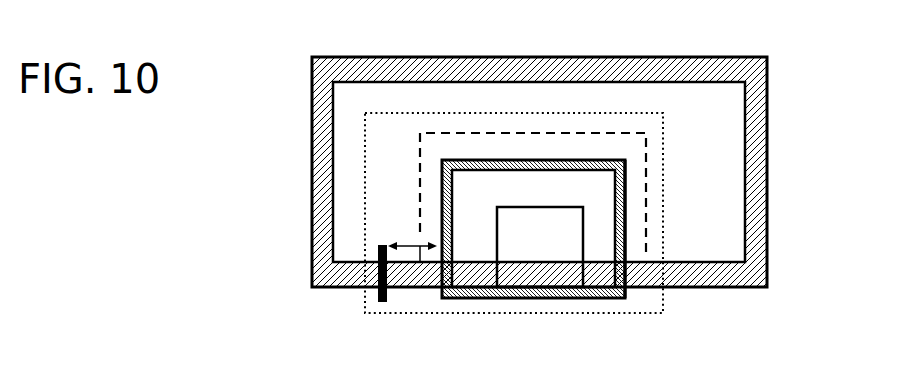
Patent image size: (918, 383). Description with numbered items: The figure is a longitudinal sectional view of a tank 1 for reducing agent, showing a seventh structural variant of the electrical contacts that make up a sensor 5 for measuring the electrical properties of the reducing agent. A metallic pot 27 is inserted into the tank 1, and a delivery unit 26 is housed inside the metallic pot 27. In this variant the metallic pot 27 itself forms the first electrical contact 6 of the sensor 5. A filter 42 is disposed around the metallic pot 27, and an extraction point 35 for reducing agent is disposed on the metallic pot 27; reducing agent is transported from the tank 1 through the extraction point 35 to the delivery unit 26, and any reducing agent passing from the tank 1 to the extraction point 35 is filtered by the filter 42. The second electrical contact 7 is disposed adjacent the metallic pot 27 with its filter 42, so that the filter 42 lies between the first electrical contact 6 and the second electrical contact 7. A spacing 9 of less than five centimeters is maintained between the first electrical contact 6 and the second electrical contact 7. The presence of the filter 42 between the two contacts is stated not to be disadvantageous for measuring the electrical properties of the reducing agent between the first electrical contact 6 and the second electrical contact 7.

The tank 1 is at (782, 65).
The sensor 5 is at (663, 163).
The first electrical contact 6 is at (625, 158).
The second electrical contact 7 is at (383, 245).
The spacing 9 is at (406, 240).
The delivery unit 26 is at (517, 251).
The metallic pot 27 is at (627, 228).
The extraction point 35 is at (433, 236).
The filter 42 is at (548, 133).